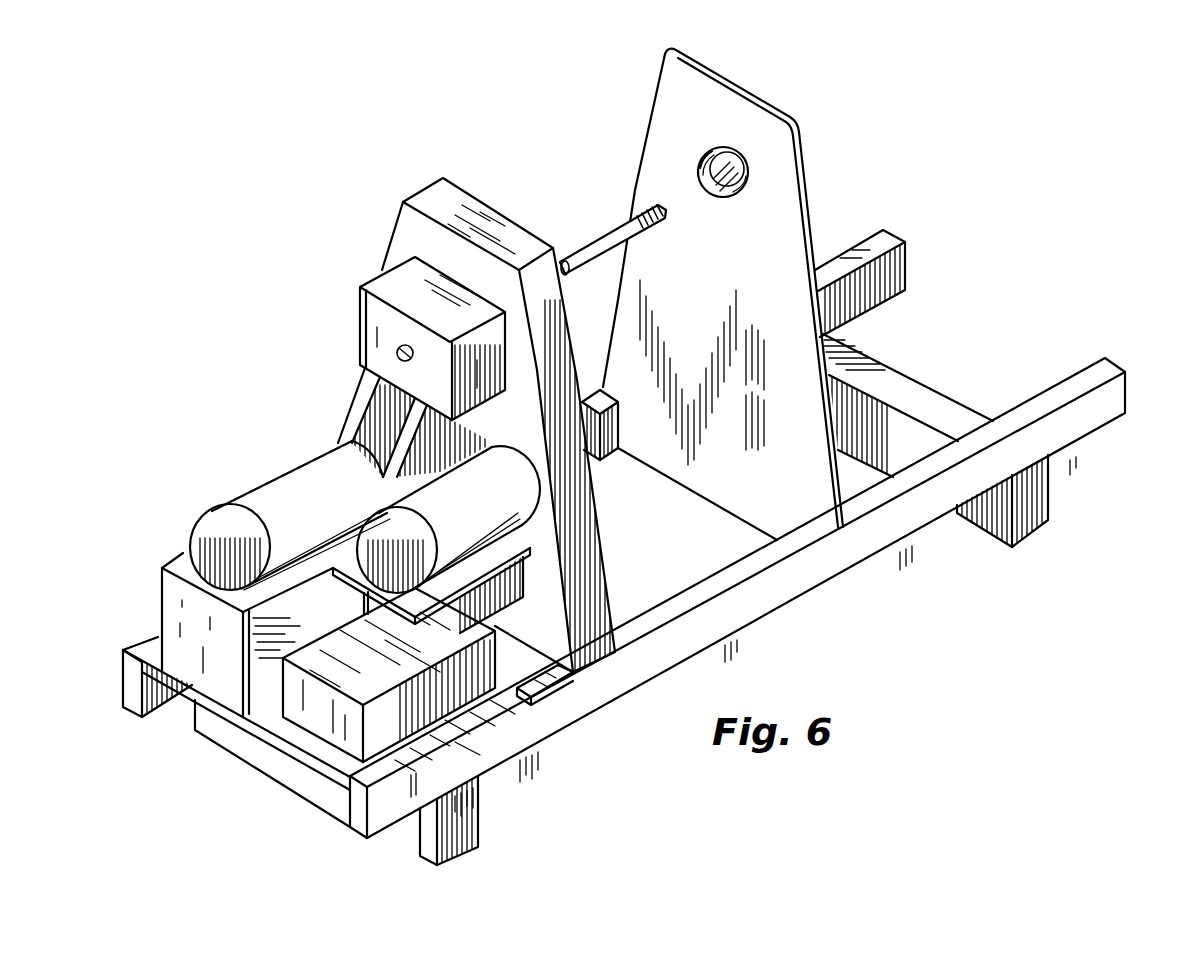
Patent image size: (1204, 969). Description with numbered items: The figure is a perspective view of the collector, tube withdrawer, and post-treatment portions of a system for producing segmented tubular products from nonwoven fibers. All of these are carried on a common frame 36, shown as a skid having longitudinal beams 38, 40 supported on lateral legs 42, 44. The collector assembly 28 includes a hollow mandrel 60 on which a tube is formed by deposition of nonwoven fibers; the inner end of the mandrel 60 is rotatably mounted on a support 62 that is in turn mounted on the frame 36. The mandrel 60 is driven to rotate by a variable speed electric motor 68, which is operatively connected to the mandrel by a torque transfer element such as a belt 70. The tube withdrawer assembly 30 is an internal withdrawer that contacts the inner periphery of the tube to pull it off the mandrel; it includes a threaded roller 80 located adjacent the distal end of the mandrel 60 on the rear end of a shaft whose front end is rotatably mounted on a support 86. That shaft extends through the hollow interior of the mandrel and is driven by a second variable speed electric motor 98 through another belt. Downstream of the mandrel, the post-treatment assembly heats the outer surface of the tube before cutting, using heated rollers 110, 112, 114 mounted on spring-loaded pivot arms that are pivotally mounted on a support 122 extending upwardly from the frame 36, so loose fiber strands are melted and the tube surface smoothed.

The collector assembly 28 is at (581, 234).
The tube withdrawer assembly 30 is at (357, 278).
The frame 36 is at (1058, 364).
The longitudinal beam 38 is at (883, 262).
The longitudinal beam 40 is at (1122, 378).
The lateral leg 42 is at (465, 813).
The lateral leg 44 is at (1040, 487).
The mandrel 60 is at (562, 270).
The support 62 is at (398, 209).
The variable speed electric motor 68 is at (276, 479).
The belt 70 is at (367, 390).
The threaded roller 80 is at (650, 207).
The support 86 is at (360, 306).
The variable speed electric motor 98 is at (527, 488).
The heated roller 110 is at (723, 153).
The heated roller 112 is at (743, 193).
The heated roller 114 is at (710, 157).
The support 122 is at (799, 158).